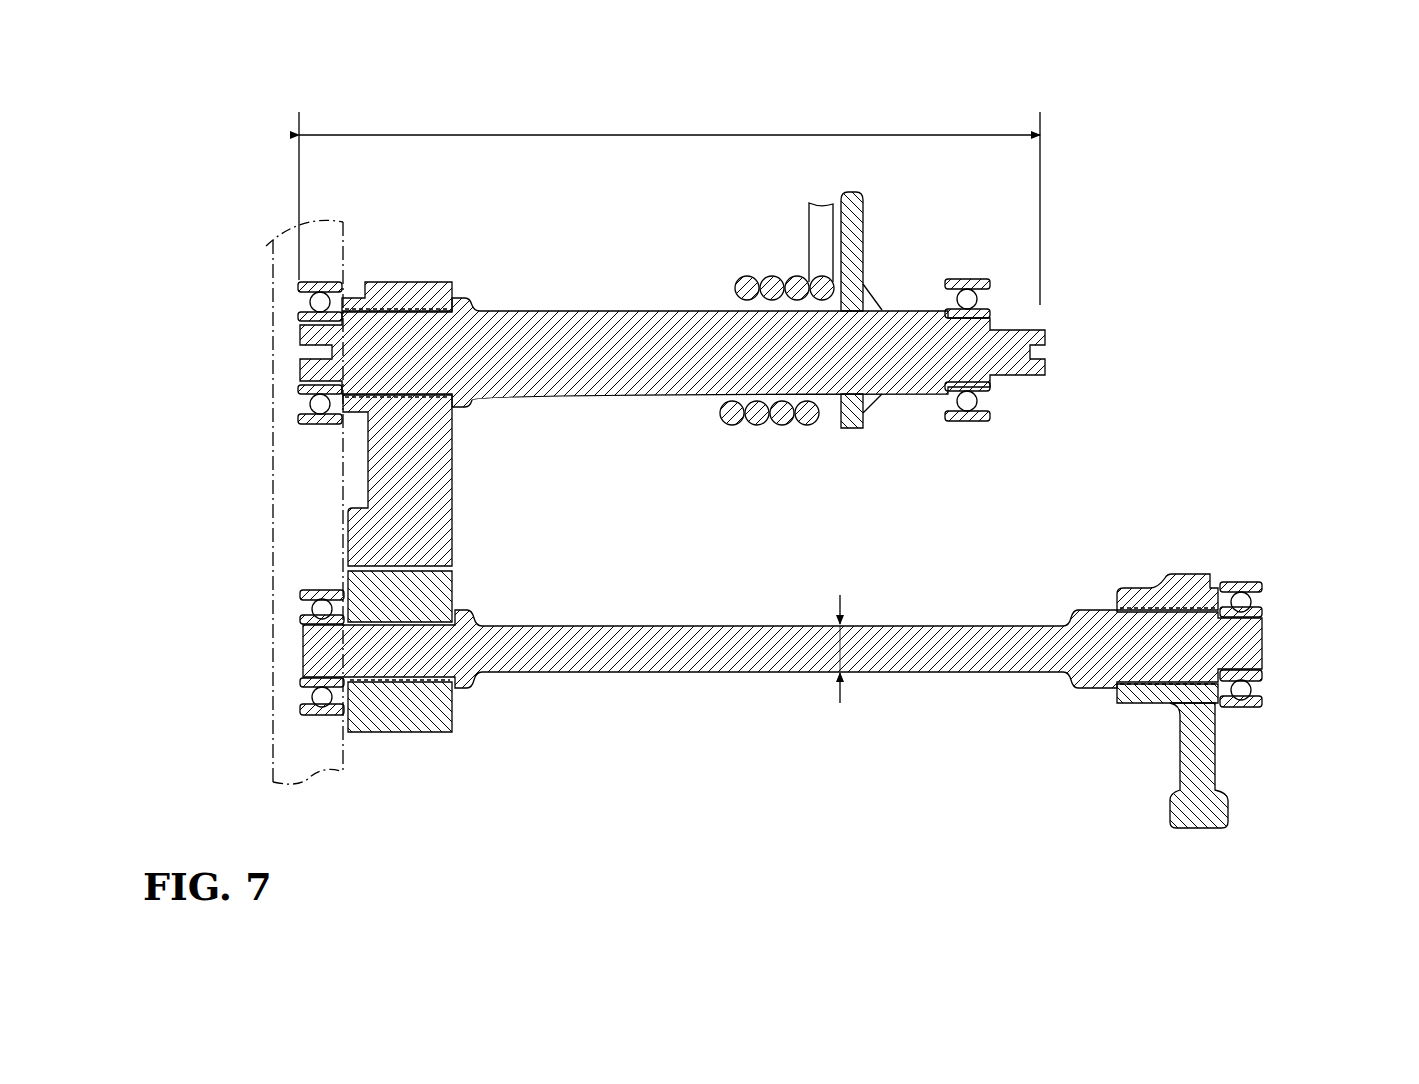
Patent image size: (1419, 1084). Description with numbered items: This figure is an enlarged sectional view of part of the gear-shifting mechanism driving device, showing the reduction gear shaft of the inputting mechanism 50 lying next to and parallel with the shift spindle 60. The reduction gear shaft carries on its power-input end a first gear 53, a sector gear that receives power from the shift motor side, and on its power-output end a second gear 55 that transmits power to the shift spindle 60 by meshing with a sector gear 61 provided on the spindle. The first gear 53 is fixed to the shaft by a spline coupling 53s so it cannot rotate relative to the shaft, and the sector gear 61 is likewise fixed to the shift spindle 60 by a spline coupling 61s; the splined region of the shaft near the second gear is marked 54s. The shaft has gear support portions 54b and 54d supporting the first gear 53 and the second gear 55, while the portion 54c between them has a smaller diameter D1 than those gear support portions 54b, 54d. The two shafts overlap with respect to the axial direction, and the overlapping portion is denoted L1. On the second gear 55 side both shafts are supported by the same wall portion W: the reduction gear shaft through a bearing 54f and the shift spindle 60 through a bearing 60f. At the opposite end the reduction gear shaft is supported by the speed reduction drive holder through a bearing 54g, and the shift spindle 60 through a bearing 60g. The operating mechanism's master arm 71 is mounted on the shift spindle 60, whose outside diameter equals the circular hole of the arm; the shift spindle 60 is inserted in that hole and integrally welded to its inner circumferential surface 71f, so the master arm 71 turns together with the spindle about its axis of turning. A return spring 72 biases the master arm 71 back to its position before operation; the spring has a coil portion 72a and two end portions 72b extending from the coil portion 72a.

The inputting mechanism 50 is at (782, 686).
The first gear 53 is at (1205, 669).
The spline coupling 53s is at (1145, 608).
The gear support portion 54b is at (1157, 642).
The portion of the reduction gear shaft 54c is at (932, 625).
The gear support portion 54d is at (418, 655).
The bearing 54f is at (300, 711).
The bearing 54g is at (1264, 701).
The shaft spline portion 54s is at (398, 688).
The second gear 55 is at (455, 590).
The shift spindle 60 is at (634, 402).
The bearing 60f is at (298, 421).
The bearing 60g is at (988, 419).
The sector gear 61 is at (453, 472).
The spline coupling 61s is at (398, 308).
The master arm 71 is at (866, 221).
The inner circumferential surface 71f is at (851, 429).
The return spring 72 is at (753, 341).
The coil portion 72a is at (742, 279).
The end portion 72b is at (812, 221).
The wall portion W is at (270, 527).
The overlapping portion L1 is at (669, 206).
The diameter D1 is at (842, 663).